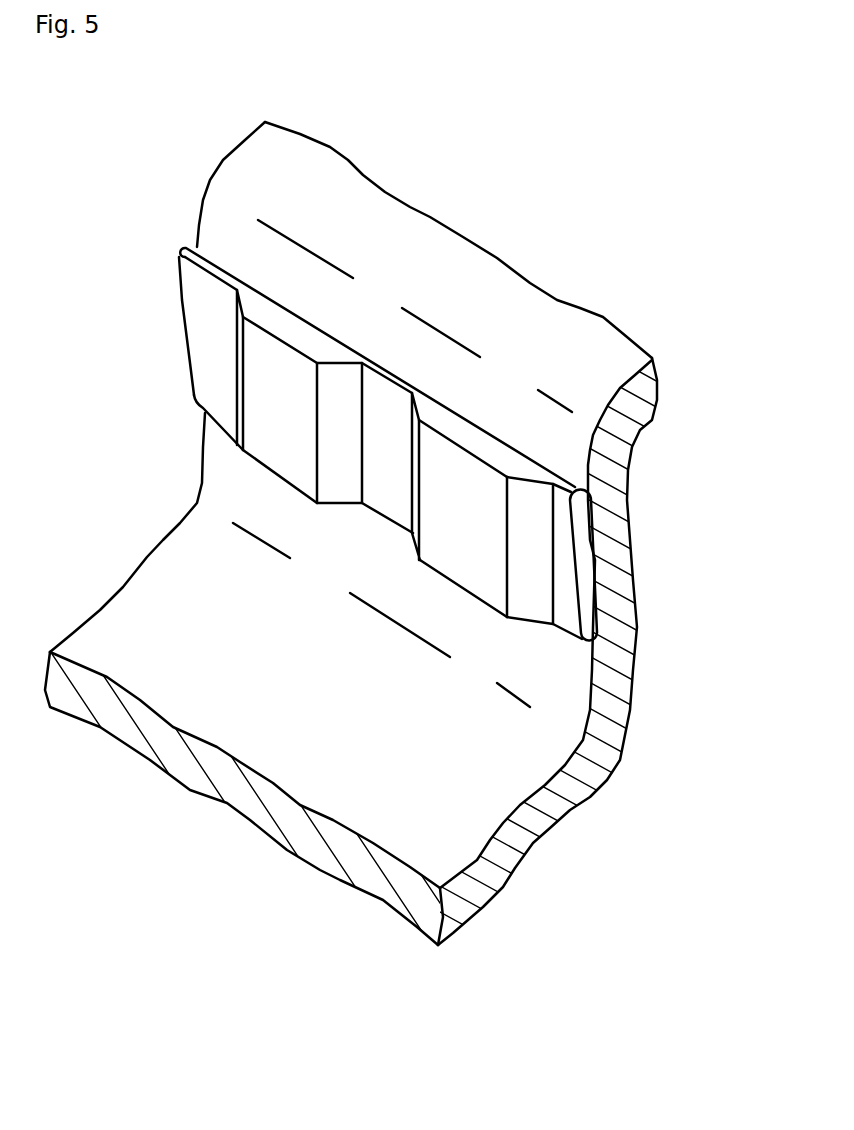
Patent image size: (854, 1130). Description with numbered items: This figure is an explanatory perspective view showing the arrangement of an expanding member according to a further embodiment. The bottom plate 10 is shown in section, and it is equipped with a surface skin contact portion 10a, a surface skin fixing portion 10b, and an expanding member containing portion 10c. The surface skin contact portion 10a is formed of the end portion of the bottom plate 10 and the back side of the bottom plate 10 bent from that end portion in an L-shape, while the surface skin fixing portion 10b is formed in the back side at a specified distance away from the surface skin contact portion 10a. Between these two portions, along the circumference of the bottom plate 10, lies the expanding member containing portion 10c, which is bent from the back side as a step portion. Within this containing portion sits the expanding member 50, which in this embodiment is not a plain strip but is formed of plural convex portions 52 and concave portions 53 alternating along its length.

The bottom plate 10 is at (415, 240).
The surface skin contact portion 10a is at (590, 362).
The surface skin fixing portion 10b is at (423, 747).
The expanding member containing portion 10c is at (550, 665).
The expanding member 50 is at (461, 444).
The convex portions 52 is at (477, 553).
The concave portions 53 is at (390, 435).